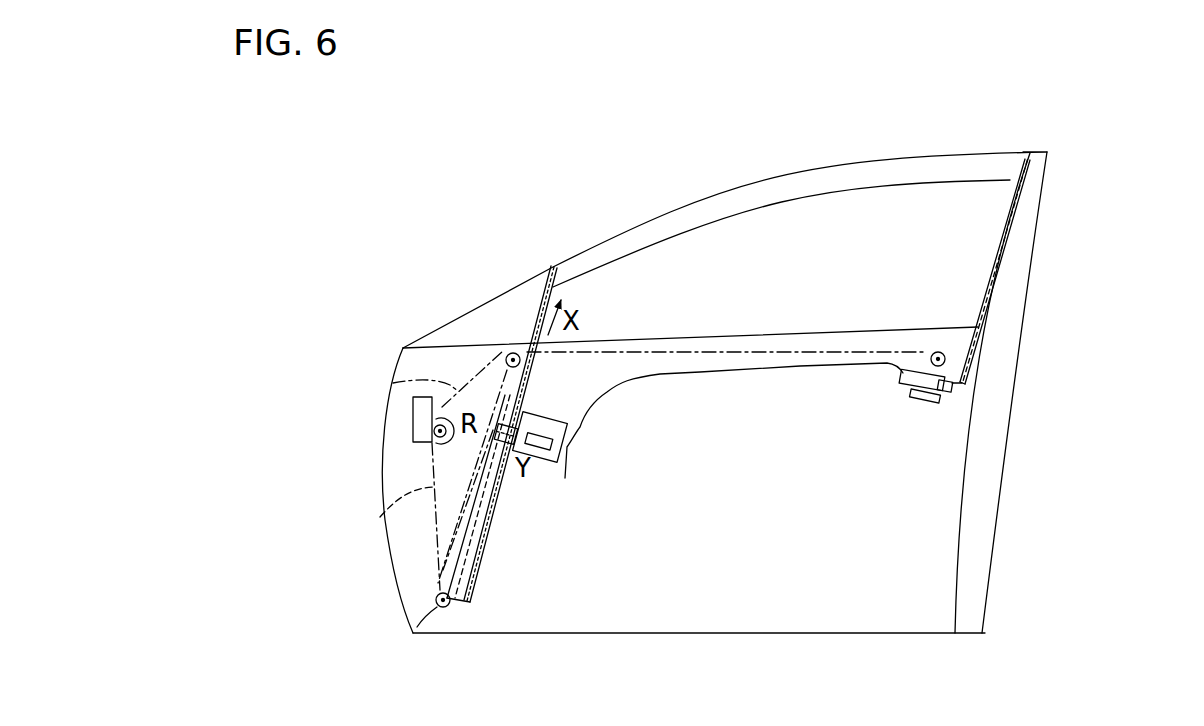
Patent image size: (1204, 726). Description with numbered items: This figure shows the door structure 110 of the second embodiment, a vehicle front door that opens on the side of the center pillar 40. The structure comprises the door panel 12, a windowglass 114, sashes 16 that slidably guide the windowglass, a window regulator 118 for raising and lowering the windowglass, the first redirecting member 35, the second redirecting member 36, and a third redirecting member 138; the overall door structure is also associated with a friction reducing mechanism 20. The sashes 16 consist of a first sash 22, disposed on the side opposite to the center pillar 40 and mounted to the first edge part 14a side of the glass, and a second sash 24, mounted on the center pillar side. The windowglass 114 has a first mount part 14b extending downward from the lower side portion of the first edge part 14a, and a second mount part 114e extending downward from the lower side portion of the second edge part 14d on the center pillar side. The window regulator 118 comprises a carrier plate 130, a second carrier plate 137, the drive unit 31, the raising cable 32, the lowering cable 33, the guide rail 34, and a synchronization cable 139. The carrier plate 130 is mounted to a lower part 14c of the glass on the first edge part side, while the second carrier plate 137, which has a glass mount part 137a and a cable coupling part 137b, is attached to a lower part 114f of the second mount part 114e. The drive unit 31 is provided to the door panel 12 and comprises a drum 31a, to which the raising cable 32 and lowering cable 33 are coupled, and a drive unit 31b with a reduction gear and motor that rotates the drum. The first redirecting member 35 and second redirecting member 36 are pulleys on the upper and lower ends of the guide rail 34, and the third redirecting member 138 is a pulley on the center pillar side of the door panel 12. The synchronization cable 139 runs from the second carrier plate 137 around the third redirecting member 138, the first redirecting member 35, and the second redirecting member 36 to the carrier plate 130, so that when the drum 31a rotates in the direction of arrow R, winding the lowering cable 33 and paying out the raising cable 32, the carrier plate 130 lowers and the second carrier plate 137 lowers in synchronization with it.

The door panel 12 is at (618, 585).
The first edge part 14a is at (480, 387).
The first mount part 14b is at (573, 400).
The lower part 14c is at (508, 476).
The second edge part 14d is at (988, 298).
The sashes 16 is at (520, 319).
The friction reducing mechanism 20 is at (1007, 223).
The first sash 22 is at (543, 287).
The second sash 24 is at (1017, 197).
The drive unit 31 is at (408, 418).
The drum 31a is at (433, 432).
The drive unit 31b is at (425, 412).
The raising cable 32 is at (389, 378).
The lowering cable 33 is at (380, 517).
The guide rail 34 is at (483, 550).
The first redirecting member 35 is at (507, 357).
The second redirecting member 36 is at (413, 627).
The center pillar 40 is at (1000, 418).
The door structure 110 is at (537, 237).
The windowglass 114 is at (675, 227).
The second mount part 114e is at (903, 370).
The lower part 114f is at (948, 393).
The window regulator 118 is at (508, 499).
The carrier plate 130 is at (543, 415).
The second carrier plate 137 is at (905, 445).
The glass mount part 137a is at (918, 405).
The cable coupling part 137b is at (925, 404).
The third redirecting member 138 is at (937, 352).
The synchronization cable 139 is at (727, 350).